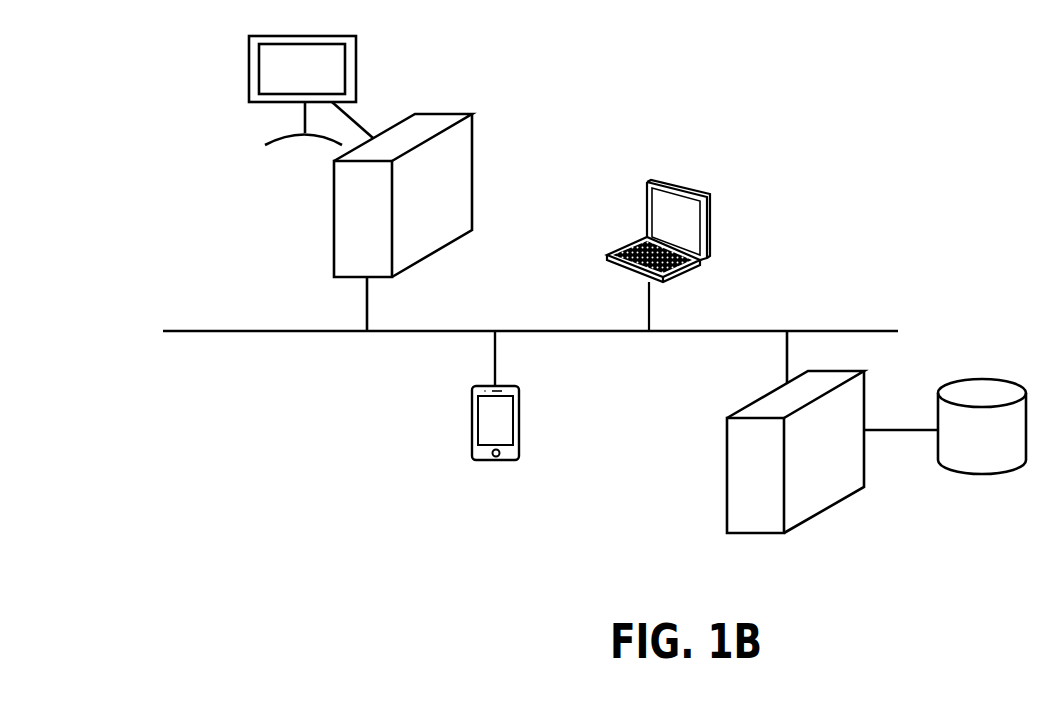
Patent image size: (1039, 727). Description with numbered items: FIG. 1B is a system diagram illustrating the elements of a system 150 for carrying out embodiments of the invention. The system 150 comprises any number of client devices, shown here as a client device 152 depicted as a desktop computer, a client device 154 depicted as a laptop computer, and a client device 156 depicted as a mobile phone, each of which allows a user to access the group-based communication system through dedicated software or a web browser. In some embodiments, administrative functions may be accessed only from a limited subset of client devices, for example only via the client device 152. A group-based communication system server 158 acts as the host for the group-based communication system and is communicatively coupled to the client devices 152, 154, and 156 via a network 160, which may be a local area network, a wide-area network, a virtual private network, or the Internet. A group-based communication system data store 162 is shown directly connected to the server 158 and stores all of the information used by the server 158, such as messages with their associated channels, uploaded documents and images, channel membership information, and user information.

The system 150 is at (185, 518).
The client device 152 is at (334, 219).
The client device 154 is at (647, 212).
The client device 156 is at (519, 423).
The group-based communication system server 158 is at (727, 484).
The network 160 is at (205, 331).
The group-based communication system data store 162 is at (980, 474).